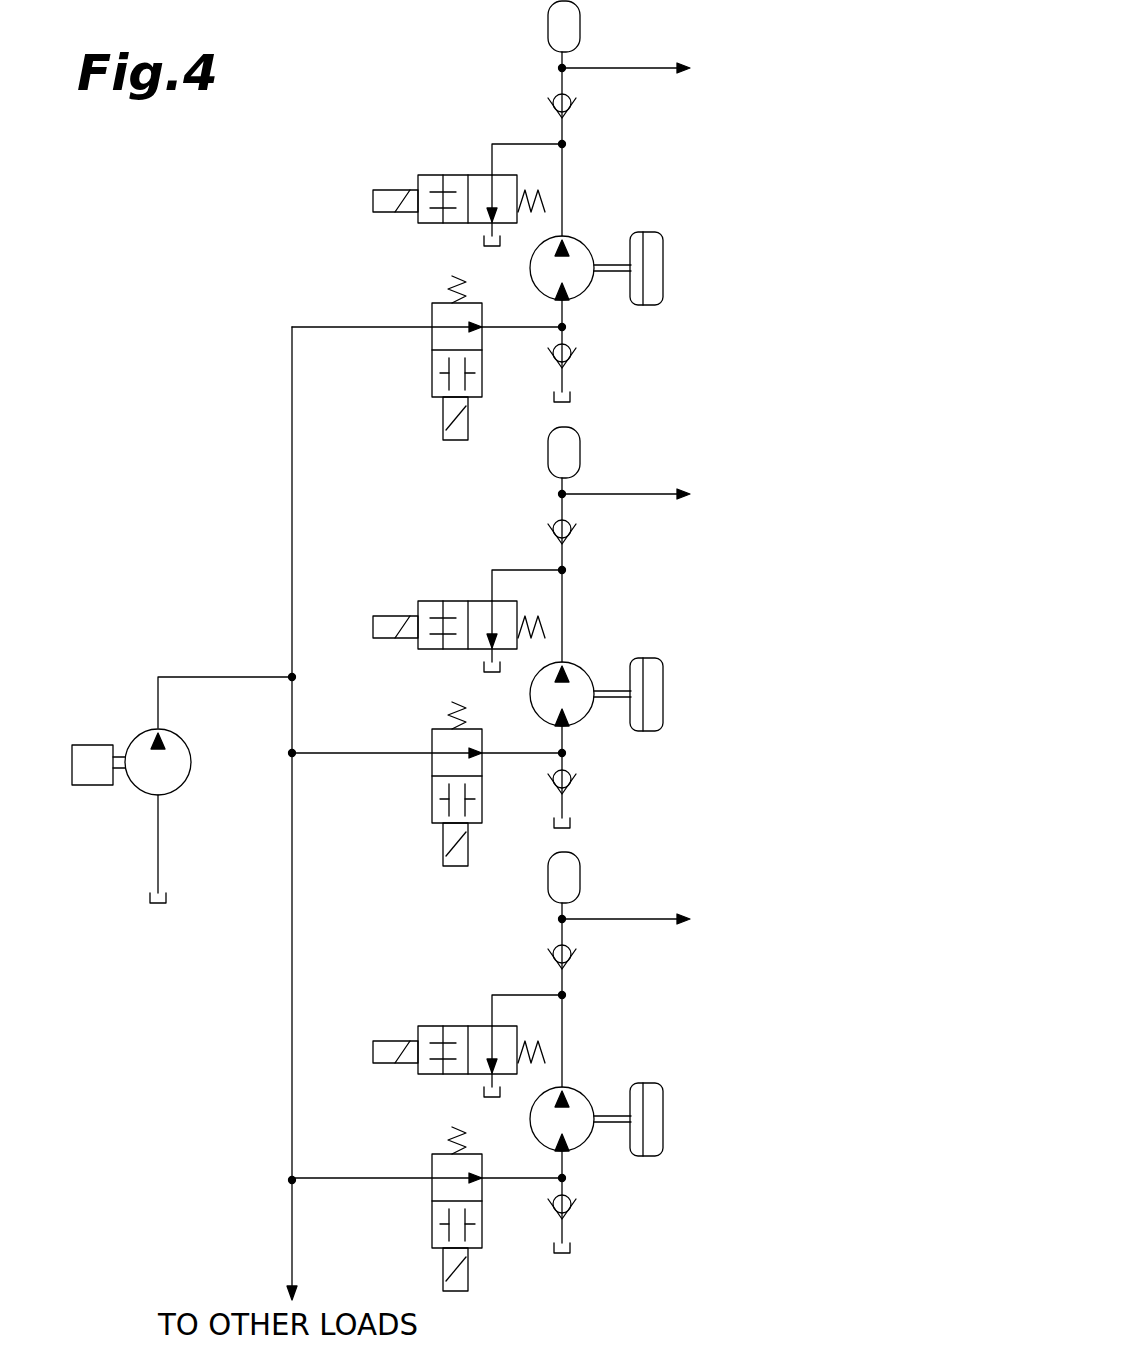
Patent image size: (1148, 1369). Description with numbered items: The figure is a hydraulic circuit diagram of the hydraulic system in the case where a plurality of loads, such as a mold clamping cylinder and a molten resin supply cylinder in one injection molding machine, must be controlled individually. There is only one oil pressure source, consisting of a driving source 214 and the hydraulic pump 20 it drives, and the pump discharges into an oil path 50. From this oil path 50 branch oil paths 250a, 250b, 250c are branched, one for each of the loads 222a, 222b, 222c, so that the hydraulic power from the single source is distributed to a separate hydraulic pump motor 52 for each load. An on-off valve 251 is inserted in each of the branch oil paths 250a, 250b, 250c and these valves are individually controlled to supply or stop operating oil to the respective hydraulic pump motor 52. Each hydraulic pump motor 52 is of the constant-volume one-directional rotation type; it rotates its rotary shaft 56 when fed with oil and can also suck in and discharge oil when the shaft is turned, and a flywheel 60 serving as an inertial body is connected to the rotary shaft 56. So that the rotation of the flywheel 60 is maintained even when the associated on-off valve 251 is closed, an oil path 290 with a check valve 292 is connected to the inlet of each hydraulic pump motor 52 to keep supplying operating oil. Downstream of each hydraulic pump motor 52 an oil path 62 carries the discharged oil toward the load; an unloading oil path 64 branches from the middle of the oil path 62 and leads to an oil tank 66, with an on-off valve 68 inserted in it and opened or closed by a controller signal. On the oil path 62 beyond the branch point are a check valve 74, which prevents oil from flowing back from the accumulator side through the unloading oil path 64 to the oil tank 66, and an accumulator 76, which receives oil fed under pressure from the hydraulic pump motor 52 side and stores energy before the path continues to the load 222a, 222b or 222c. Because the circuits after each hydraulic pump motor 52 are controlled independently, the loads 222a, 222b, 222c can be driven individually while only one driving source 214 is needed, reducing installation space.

The hydraulic pump 20 is at (192, 762).
The driving source 214 is at (100, 742).
The oil path 50 is at (210, 675).
The oil tank 66 is at (168, 895).
The accumulator 76 is at (581, 18).
The check valve 74 is at (573, 106).
The oil path 62 is at (565, 172).
The unloading oil path 64 is at (522, 144).
The on-off valve 68 is at (432, 175).
The hydraulic pump motor 52 is at (592, 240).
The rotary shaft 56 is at (617, 274).
The flywheel 60 is at (664, 276).
The oil path 290 is at (565, 330).
The check valve 292 is at (575, 358).
The branch oil path 250a is at (318, 325).
The branch oil path 250b is at (392, 758).
The branch oil path 250c is at (392, 1183).
The on-off valve 251 is at (432, 357).
The load 222a is at (732, 68).
The load 222b is at (732, 494).
The load 222c is at (732, 919).